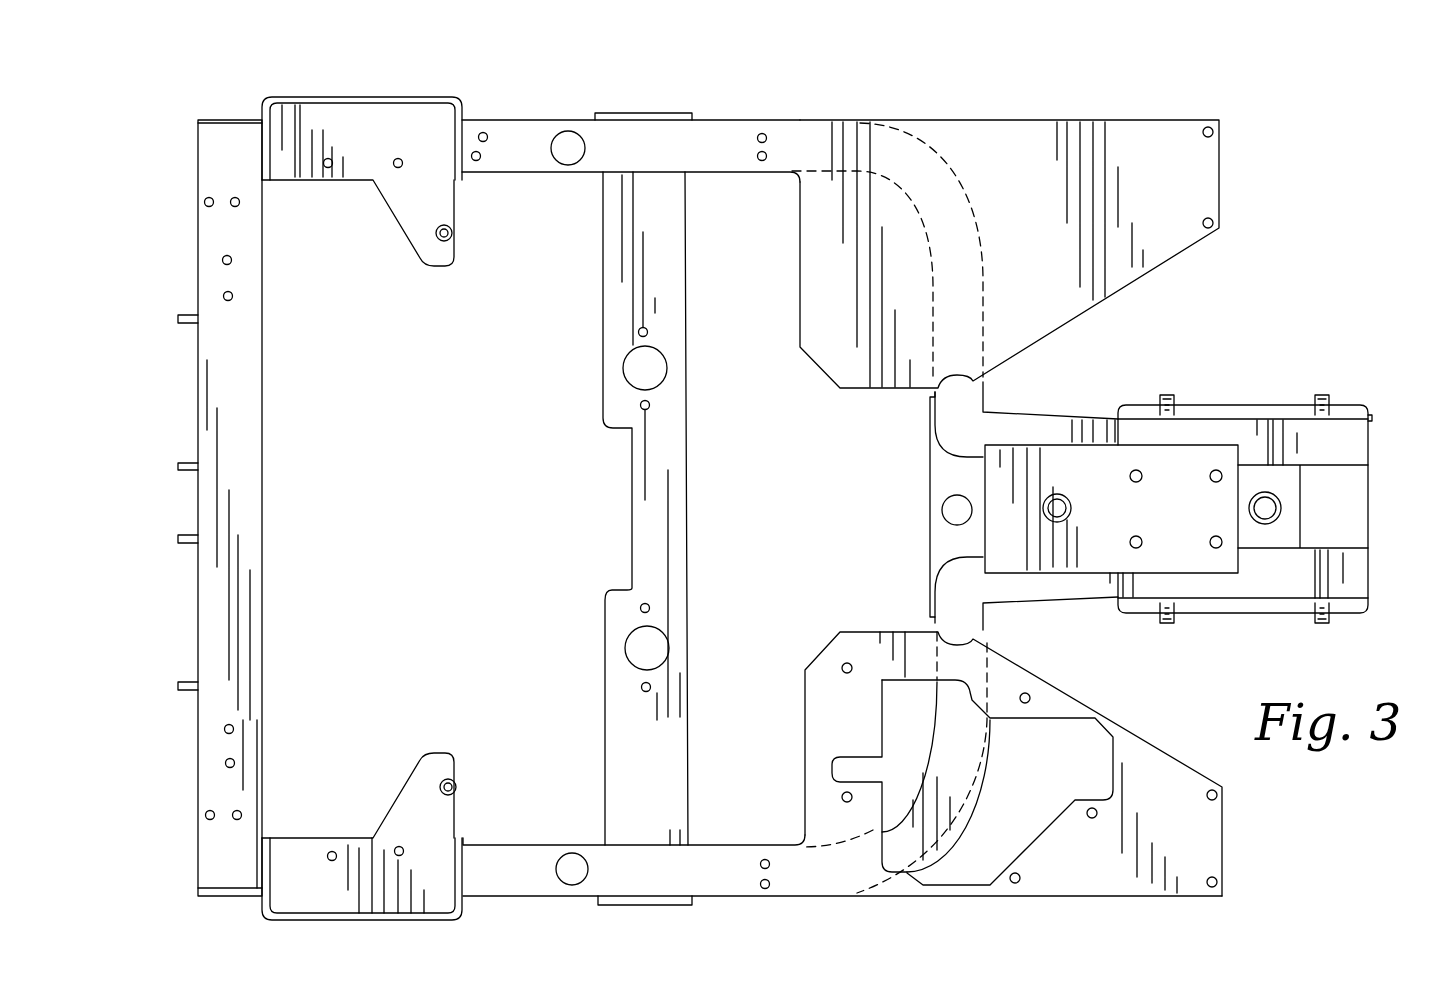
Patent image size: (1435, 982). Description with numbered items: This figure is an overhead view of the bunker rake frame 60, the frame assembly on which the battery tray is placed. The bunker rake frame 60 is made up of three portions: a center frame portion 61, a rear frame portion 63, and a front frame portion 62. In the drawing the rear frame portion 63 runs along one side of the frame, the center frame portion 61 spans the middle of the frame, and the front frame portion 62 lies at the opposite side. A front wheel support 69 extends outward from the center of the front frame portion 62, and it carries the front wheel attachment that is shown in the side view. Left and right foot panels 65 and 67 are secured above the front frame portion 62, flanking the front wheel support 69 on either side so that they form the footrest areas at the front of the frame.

The bunker rake frame 60 is at (1103, 86).
The center frame portion 61 is at (686, 517).
The front frame portion 62 is at (1008, 386).
The rear frame portion 63 is at (198, 503).
The left foot panel 65 is at (1182, 192).
The right foot panel 67 is at (1187, 825).
The front wheel support 69 is at (1252, 395).